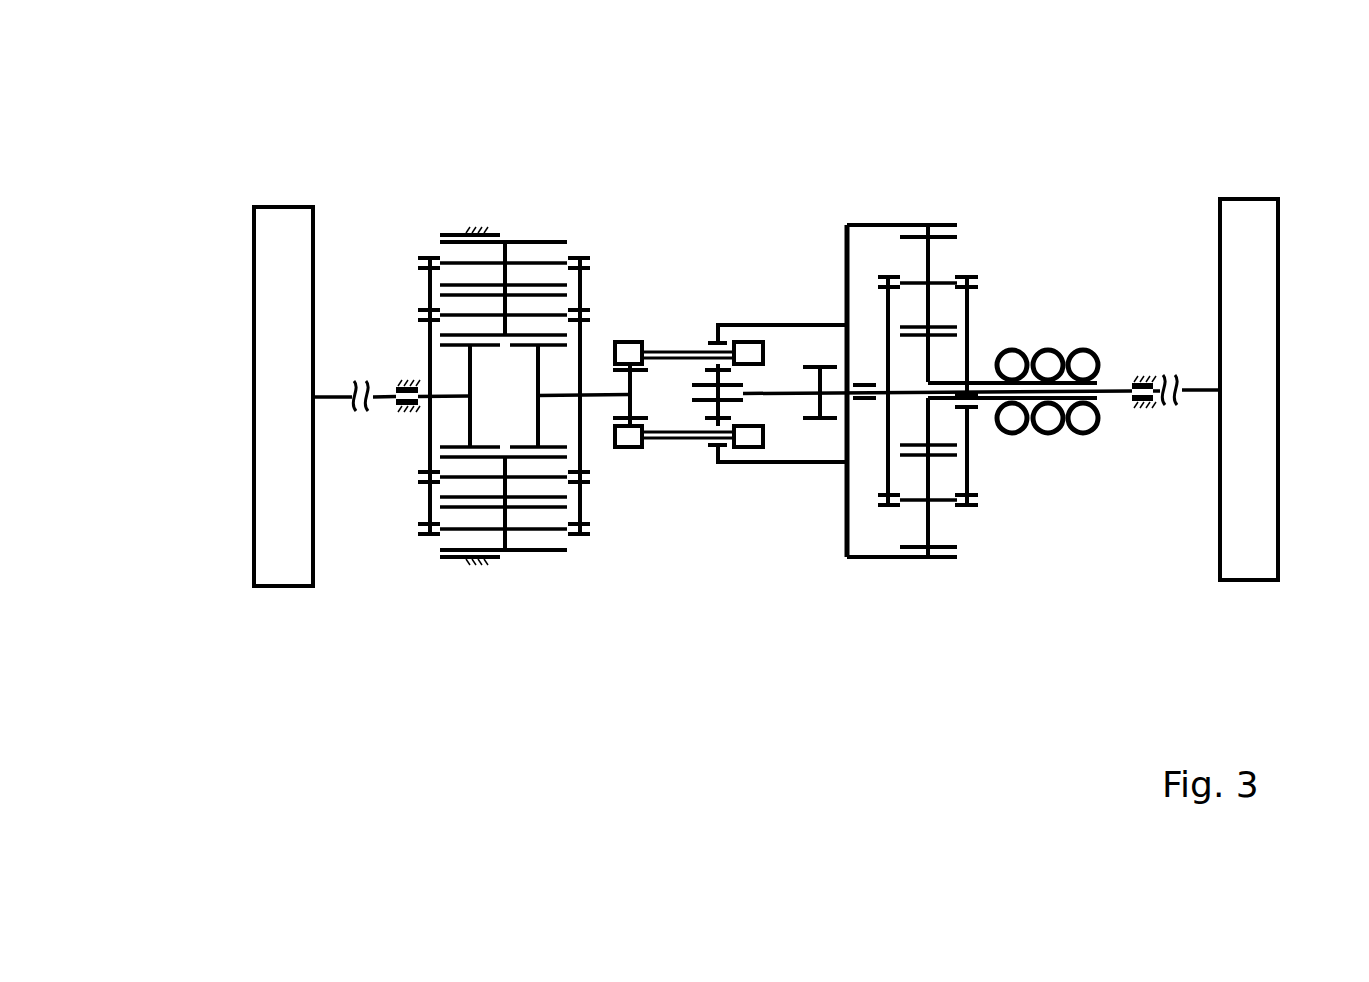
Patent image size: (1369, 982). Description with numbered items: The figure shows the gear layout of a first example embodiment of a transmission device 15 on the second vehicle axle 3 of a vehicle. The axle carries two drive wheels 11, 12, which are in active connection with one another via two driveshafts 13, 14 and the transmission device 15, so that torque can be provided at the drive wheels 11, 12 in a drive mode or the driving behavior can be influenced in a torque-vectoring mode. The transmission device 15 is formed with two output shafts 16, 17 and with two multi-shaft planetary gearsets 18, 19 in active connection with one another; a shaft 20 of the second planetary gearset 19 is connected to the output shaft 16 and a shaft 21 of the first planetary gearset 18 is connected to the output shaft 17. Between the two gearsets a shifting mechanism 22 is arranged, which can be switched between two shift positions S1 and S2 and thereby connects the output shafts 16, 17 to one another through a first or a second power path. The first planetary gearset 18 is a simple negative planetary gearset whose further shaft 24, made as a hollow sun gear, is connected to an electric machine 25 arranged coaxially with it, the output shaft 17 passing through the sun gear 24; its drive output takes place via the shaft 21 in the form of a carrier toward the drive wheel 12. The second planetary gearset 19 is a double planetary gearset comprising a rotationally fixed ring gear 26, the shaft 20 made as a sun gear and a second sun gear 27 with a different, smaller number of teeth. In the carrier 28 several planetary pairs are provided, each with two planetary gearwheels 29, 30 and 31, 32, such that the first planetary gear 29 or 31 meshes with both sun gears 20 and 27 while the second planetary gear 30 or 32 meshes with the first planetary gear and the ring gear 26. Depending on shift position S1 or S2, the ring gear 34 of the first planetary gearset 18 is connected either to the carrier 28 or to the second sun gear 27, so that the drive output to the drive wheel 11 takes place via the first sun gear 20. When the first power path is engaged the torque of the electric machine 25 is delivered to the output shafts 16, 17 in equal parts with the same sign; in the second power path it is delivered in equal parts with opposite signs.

The second vehicle axle 3 is at (1153, 544).
The drive wheel 11 is at (275, 293).
The drive wheel 12 is at (1270, 231).
The driveshaft 13 is at (340, 392).
The driveshaft 14 is at (1198, 376).
The transmission device 15 is at (423, 130).
The output shaft 16 is at (393, 393).
The output shaft 17 is at (1151, 368).
The first planetary gearset 18 is at (921, 204).
The second planetary gearset 19 is at (508, 205).
The shaft 20 is at (435, 430).
The shaft 21 is at (885, 442).
The shifting mechanism 22 is at (691, 334).
The further shaft 24 is at (994, 352).
The electric machine 25 is at (1027, 456).
The ring gear 26 is at (448, 234).
The second sun gear 27 is at (545, 420).
The carrier 28 is at (455, 398).
The first planetary gear 29 is at (570, 295).
The second planetary gear 30 is at (547, 241).
The first planetary gear 31 is at (585, 507).
The second planetary gear 32 is at (522, 549).
The ring gear 34 is at (858, 224).
The shift position S1 is at (635, 329).
The shift position S2 is at (812, 341).